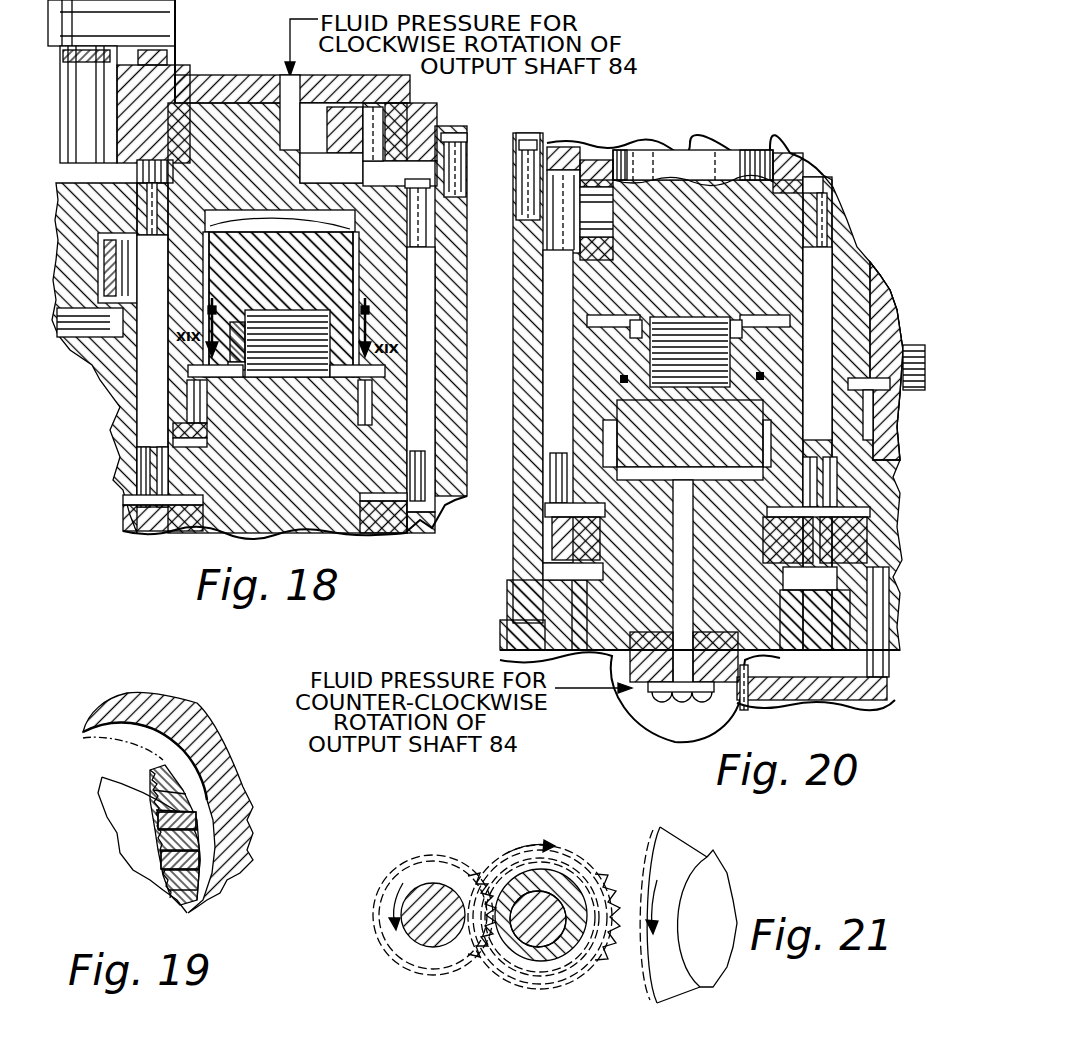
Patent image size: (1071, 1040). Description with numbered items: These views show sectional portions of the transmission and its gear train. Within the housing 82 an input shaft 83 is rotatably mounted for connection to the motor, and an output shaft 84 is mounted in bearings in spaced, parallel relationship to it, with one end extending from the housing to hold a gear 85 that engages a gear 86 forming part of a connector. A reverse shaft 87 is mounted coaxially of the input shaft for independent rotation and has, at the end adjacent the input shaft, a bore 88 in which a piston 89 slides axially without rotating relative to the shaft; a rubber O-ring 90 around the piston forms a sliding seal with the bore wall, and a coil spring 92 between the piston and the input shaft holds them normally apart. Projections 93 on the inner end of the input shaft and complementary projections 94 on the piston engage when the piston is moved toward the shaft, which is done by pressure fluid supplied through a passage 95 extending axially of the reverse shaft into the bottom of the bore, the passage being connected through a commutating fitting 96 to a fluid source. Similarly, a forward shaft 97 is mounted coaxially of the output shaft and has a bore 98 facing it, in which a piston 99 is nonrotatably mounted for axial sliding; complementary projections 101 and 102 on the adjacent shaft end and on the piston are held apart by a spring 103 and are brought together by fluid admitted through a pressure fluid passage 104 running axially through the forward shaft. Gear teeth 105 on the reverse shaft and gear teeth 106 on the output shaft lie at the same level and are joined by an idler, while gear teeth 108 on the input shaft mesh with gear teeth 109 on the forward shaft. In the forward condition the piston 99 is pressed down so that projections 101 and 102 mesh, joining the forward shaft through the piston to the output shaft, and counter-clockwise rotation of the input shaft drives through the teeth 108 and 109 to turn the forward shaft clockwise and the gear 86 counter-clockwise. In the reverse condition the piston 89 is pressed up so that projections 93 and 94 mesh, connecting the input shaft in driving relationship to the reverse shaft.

In FIG. 18, the housing 82 is at (451, 502).
In FIG. 20, the housing 82 is at (513, 603).
In FIG. 18, the input shaft 83 is at (72, 68).
In FIG. 20, the input shaft 83 is at (706, 146).
In FIG. 21, the input shaft 83 is at (440, 890).
In FIG. 18, the output shaft 84 is at (214, 538).
In FIG. 20, the output shaft 84 is at (889, 628).
In FIG. 20, the gear 85 is at (860, 688).
In FIG. 21, the gear 85 is at (567, 842).
In FIG. 21, the gear 86 is at (663, 833).
In FIG. 18, the reverse shaft 87 is at (124, 413).
In FIG. 20, the reverse shaft 87 is at (577, 353).
In FIG. 20, the bore 88 is at (628, 400).
In FIG. 20, the piston 89 is at (817, 343).
In FIG. 20, the rubber O-ring 90 is at (762, 377).
In FIG. 20, the coil spring 92 is at (693, 374).
In FIG. 20, the projections 93 is at (740, 316).
In FIG. 20, the complementary projections 94 is at (753, 328).
In FIG. 20, the passage 95 is at (674, 546).
In FIG. 20, the commutating fitting 96 is at (637, 693).
In FIG. 18, the forward shaft 97 is at (237, 110).
In FIG. 20, the forward shaft 97 is at (864, 258).
In FIG. 19, the forward shaft 97 is at (115, 700).
In FIG. 21, the forward shaft 97 is at (573, 890).
In FIG. 18, the bore 98 is at (252, 222).
In FIG. 19, the bore 98 is at (158, 730).
In FIG. 18, the piston 99 is at (335, 271).
In FIG. 19, the piston 99 is at (112, 760).
In FIG. 21, the piston 99 is at (550, 937).
In FIG. 18, the projections 101 is at (236, 370).
In FIG. 19, the projections 101 is at (200, 802).
In FIG. 18, the projections 102 is at (236, 352).
In FIG. 19, the projections 102 is at (204, 852).
In FIG. 18, the spring 103 is at (284, 362).
In FIG. 19, the spring 103 is at (122, 787).
In FIG. 18, the pressure fluid passage 104 is at (301, 162).
In FIG. 18, the gear teeth 105 is at (140, 478).
In FIG. 20, the gear teeth 105 is at (550, 470).
In FIG. 18, the gear teeth 106 is at (414, 468).
In FIG. 20, the gear teeth 106 is at (838, 482).
In FIG. 18, the gear teeth 108 is at (147, 187).
In FIG. 20, the gear teeth 108 is at (547, 228).
In FIG. 21, the gear teeth 108 is at (394, 868).
In FIG. 18, the gear teeth 109 is at (425, 222).
In FIG. 20, the gear teeth 109 is at (829, 197).
In FIG. 21, the gear teeth 109 is at (498, 938).